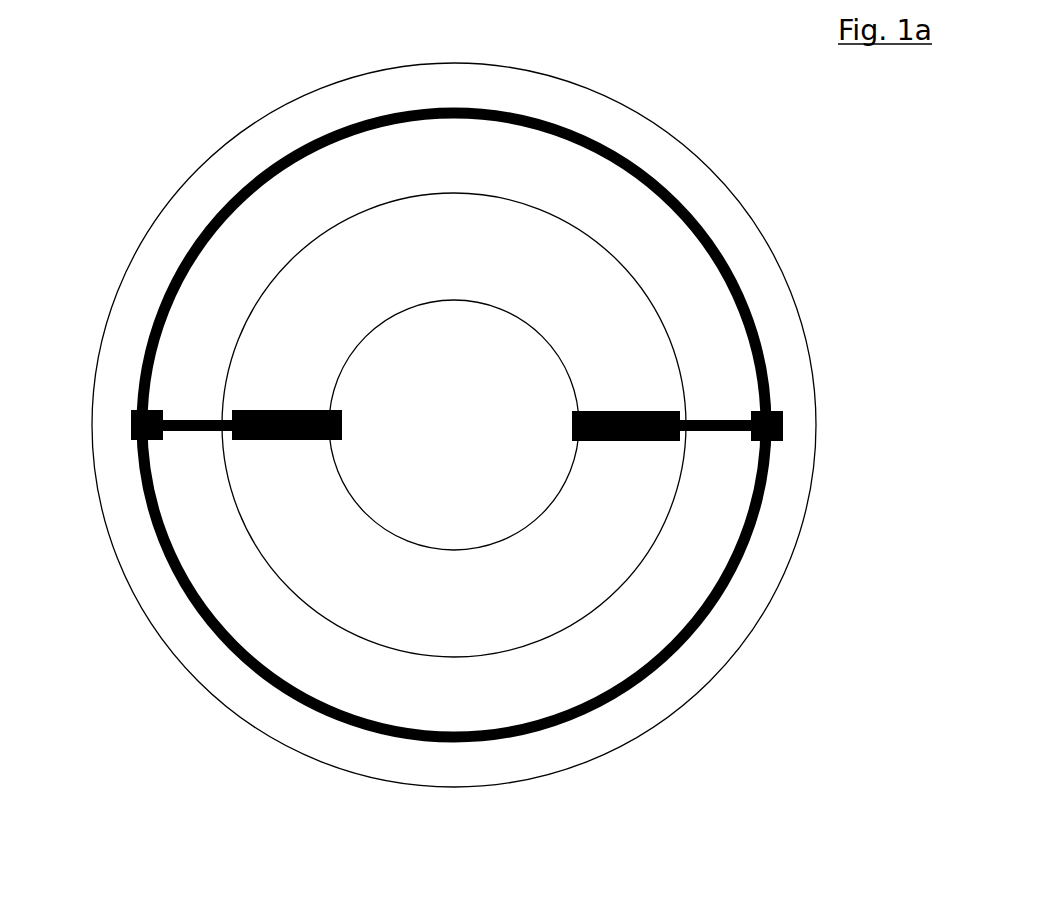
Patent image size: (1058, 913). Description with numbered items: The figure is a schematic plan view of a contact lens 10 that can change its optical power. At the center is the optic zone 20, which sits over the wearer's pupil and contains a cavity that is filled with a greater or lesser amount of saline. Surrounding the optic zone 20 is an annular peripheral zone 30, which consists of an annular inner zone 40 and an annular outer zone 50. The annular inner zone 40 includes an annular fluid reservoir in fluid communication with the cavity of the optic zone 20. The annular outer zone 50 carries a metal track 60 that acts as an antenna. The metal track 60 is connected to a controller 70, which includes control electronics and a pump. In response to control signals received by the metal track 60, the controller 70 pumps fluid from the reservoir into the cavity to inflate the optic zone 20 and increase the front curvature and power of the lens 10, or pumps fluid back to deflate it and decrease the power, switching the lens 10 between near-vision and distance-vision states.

The contact lens 10 is at (451, 465).
The optic zone 20 is at (506, 336).
The annular peripheral zone 30 is at (273, 785).
The annular inner zone 40 is at (356, 255).
The annular outer zone 50 is at (774, 260).
The metal track 60 is at (693, 213).
The controller 70 is at (270, 441).